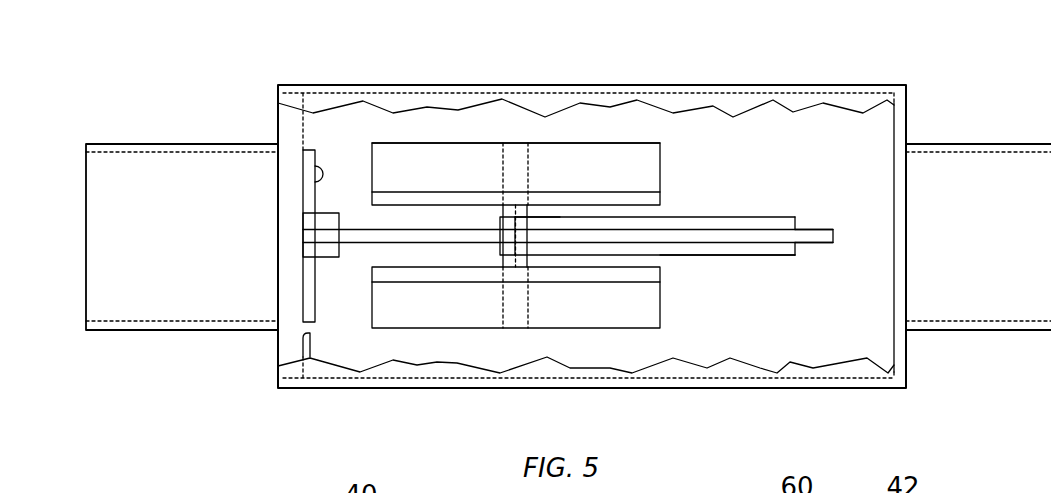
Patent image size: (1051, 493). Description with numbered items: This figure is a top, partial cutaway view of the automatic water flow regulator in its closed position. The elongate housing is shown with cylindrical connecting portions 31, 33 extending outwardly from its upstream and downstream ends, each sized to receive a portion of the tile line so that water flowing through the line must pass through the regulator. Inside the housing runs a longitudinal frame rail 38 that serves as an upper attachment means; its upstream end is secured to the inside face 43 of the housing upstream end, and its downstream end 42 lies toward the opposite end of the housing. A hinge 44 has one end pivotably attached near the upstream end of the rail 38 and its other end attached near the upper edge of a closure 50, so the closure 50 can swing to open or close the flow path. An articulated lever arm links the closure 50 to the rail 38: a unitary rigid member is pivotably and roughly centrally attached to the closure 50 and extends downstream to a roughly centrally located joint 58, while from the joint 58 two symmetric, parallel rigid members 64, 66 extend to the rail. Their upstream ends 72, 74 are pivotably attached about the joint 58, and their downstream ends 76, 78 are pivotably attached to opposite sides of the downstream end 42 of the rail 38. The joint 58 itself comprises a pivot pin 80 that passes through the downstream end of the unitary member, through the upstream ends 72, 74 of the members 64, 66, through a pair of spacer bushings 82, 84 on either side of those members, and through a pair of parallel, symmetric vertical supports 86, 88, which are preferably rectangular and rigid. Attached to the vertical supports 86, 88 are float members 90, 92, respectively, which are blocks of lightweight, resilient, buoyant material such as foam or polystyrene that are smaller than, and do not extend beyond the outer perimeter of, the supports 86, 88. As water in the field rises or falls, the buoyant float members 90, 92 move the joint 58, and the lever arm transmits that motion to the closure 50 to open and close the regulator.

The connecting portion 31 is at (162, 143).
The connecting portion 33 is at (968, 145).
The longitudinal frame rail 38 is at (348, 212).
The downstream end 42 is at (866, 240).
The inside face 43 is at (305, 357).
The hinge 44 is at (347, 281).
The closure 50 is at (303, 150).
The joint 58 is at (482, 143).
The rigid member 64 is at (739, 264).
The rigid member 66 is at (738, 209).
The upstream end 72 is at (476, 269).
The upstream end 74 is at (475, 206).
The downstream end 76 is at (821, 267).
The downstream end 78 is at (822, 213).
The pivot pin 80 is at (551, 191).
The spacer bushing 82 is at (557, 265).
The spacer bushing 84 is at (559, 205).
The vertical support 86 is at (649, 281).
The vertical support 88 is at (648, 191).
The float member 90 is at (409, 312).
The float member 92 is at (409, 181).